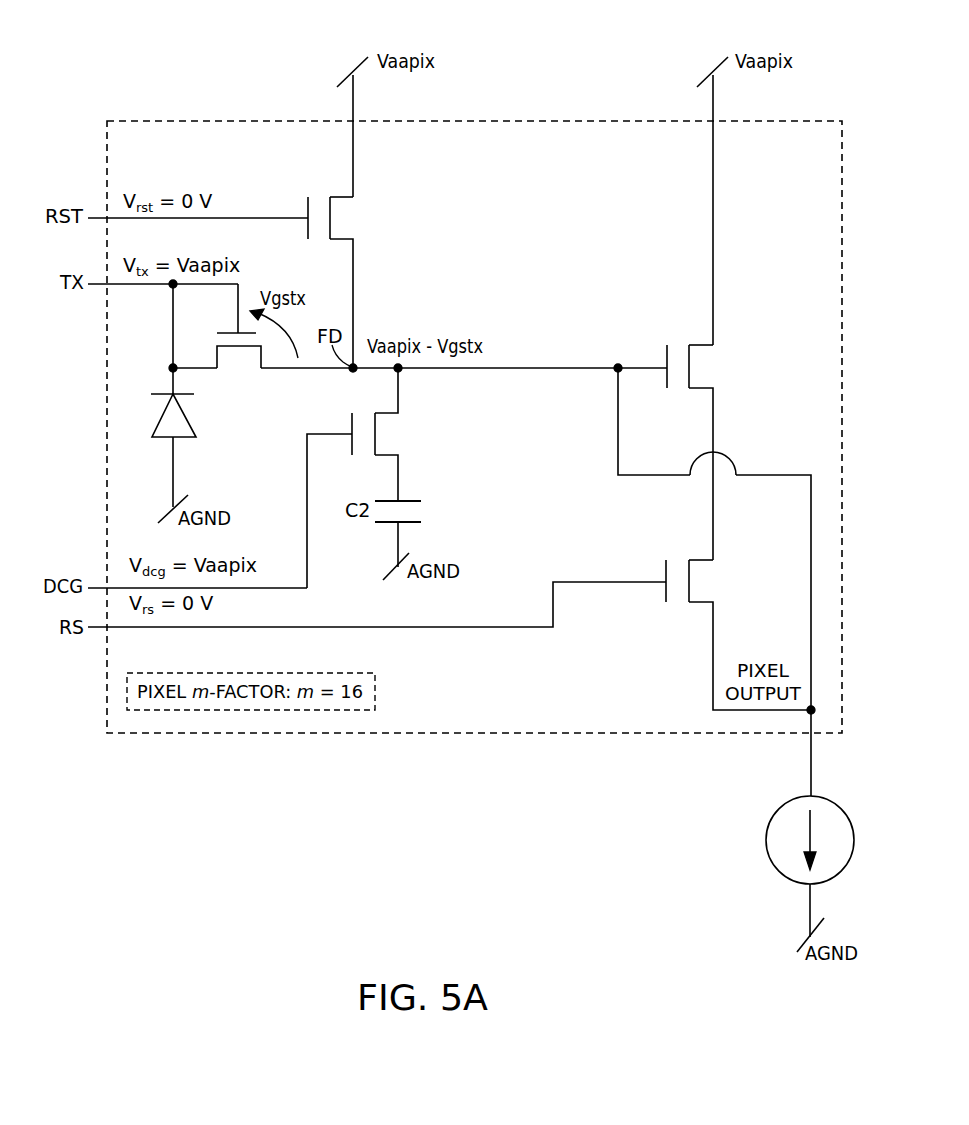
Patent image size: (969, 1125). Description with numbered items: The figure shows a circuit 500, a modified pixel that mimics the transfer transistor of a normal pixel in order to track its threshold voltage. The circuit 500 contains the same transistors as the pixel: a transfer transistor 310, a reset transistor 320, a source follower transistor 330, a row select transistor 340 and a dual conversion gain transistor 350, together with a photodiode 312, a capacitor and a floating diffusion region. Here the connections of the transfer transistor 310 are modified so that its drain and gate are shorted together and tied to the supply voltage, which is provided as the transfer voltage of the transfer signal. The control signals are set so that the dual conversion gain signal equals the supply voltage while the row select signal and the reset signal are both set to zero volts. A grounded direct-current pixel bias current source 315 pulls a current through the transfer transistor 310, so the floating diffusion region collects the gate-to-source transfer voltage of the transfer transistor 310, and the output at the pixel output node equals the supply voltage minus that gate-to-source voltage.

The circuit 500 is at (171, 98).
The transfer transistor 310 is at (250, 353).
The photodiode 312 is at (186, 419).
The DC pixel bias current source 315 is at (787, 880).
The reset transistor 320 is at (354, 240).
The source follower transistor 330 is at (713, 388).
The row select transistor 340 is at (713, 603).
The dual conversion gain transistor 350 is at (399, 456).